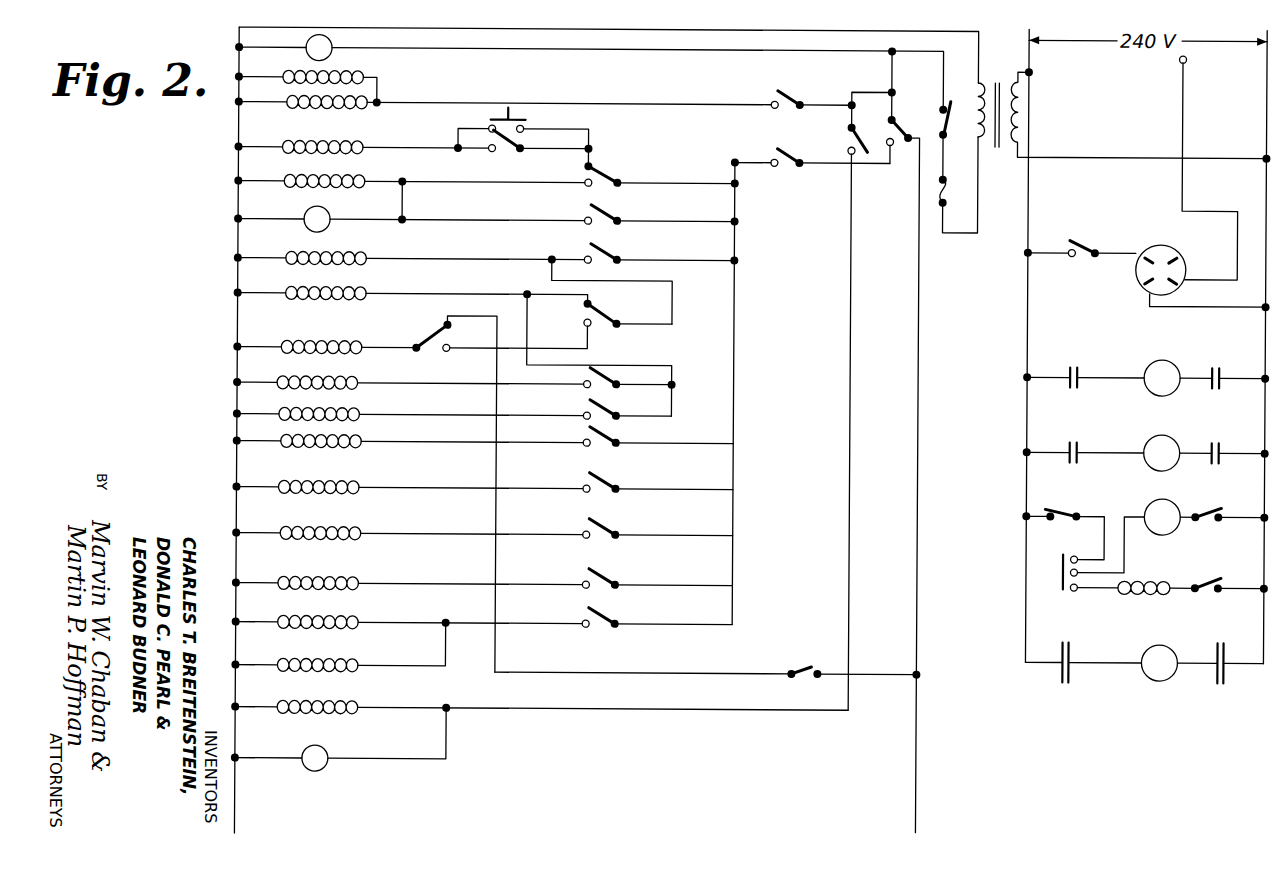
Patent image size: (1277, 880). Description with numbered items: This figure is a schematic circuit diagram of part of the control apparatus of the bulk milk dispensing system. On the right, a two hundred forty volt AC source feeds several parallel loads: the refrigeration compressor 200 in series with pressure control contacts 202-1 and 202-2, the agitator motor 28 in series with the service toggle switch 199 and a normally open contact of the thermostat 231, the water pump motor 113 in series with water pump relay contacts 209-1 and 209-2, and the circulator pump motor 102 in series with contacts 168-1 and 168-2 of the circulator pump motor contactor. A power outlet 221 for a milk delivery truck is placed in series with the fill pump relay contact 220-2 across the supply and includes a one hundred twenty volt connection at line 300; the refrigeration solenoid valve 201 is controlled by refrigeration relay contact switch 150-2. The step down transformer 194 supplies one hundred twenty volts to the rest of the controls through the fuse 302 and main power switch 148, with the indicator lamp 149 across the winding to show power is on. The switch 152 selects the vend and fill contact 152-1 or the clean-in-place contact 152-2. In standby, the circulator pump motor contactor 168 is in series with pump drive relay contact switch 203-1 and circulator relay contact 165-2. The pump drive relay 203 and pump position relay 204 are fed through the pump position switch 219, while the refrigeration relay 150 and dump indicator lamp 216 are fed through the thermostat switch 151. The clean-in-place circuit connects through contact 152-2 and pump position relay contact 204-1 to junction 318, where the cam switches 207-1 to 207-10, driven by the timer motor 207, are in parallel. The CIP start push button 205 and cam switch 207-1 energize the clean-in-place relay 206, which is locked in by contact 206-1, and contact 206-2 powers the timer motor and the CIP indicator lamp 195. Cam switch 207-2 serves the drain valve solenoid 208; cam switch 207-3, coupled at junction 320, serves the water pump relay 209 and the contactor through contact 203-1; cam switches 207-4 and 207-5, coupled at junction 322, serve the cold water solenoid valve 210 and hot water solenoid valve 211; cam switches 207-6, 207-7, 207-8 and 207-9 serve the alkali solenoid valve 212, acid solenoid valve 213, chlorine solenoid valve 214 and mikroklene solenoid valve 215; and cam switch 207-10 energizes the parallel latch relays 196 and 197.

The indicator lamp 149 is at (334, 46).
The pump drive relay 203 is at (368, 76).
The pump position relay 204 is at (371, 106).
The CIP start push button 205 is at (509, 108).
The clean-in-place relay 206 is at (365, 142).
The CIP relay contact switch 206-1 is at (498, 150).
The CIP timer motor 207 is at (365, 174).
The cam switch 207-1 is at (595, 169).
The junction 318 is at (727, 171).
The CIP indicator lamp 195 is at (330, 210).
The second CIP relay contact switch 206-2 is at (620, 215).
The drain valve solenoid 208 is at (359, 252).
The junction 320 is at (549, 253).
The cam switch 207-2 is at (616, 250).
The water pump relay 209 is at (368, 286).
The junction 322 is at (527, 288).
The cam switch 207-3 is at (601, 312).
The circulator pump motor contactor 168 is at (329, 322).
The pump drive relay contact switch 203-1 is at (418, 344).
The cold water solenoid valve 210 is at (367, 375).
The cam switch 207-4 is at (608, 366).
The hot water solenoid valve 211 is at (367, 409).
The cam switch 207-5 is at (604, 406).
The alkali solenoid valve 212 is at (367, 438).
The cam switch 207-6 is at (616, 437).
The acid solenoid valve 213 is at (364, 475).
The cam switch 207-7 is at (616, 483).
The chlorine solenoid valve 214 is at (364, 526).
The cam switch 207-8 is at (616, 528).
The mikroklene solenoid valve 215 is at (364, 571).
The cam switch 207-9 is at (616, 573).
The latch relay 196 is at (364, 615).
The cam switch 207-10 is at (611, 615).
The latch relay 197 is at (364, 657).
The refrigeration relay 150 is at (364, 704).
The dump indicator lamp 216 is at (333, 751).
The circulator relay contact 165-2 is at (807, 667).
The pump position switch 219 is at (774, 96).
The thermostat switch 151 is at (848, 130).
The pump position relay contact switch 204-1 is at (796, 165).
The switch 152 is at (898, 122).
The vend and fill contact 152-1 is at (908, 142).
The clean-in-place contact 152-2 is at (889, 148).
The main power switch 148 is at (947, 118).
The step down transformer 194 is at (996, 152).
The fuse 302 is at (943, 218).
The line 300 is at (1183, 134).
The fill pump relay contact 220-2 is at (1086, 226).
The power outlet 221 is at (1159, 244).
The contact of circulator pump motor contactor 168-1 is at (1072, 365).
The circulator pump motor 102 is at (1152, 357).
The contact of circulator pump motor contactor 168-2 is at (1224, 366).
The water pump relay contact 209-1 is at (1074, 442).
The water pump motor 113 is at (1146, 434).
The water pump relay contact 209-2 is at (1224, 443).
The service toggle switch 199 is at (1063, 506).
The agitator motor 28 is at (1146, 504).
The thermostat 231 is at (1059, 567).
The refrigeration relay contact switch 150-2 is at (1212, 578).
The refrigeration solenoid valve 201 is at (1151, 594).
The pressure control contact 202-1 is at (1080, 696).
The refrigeration compressor 200 is at (1159, 684).
The pressure control contact 202-2 is at (1232, 696).